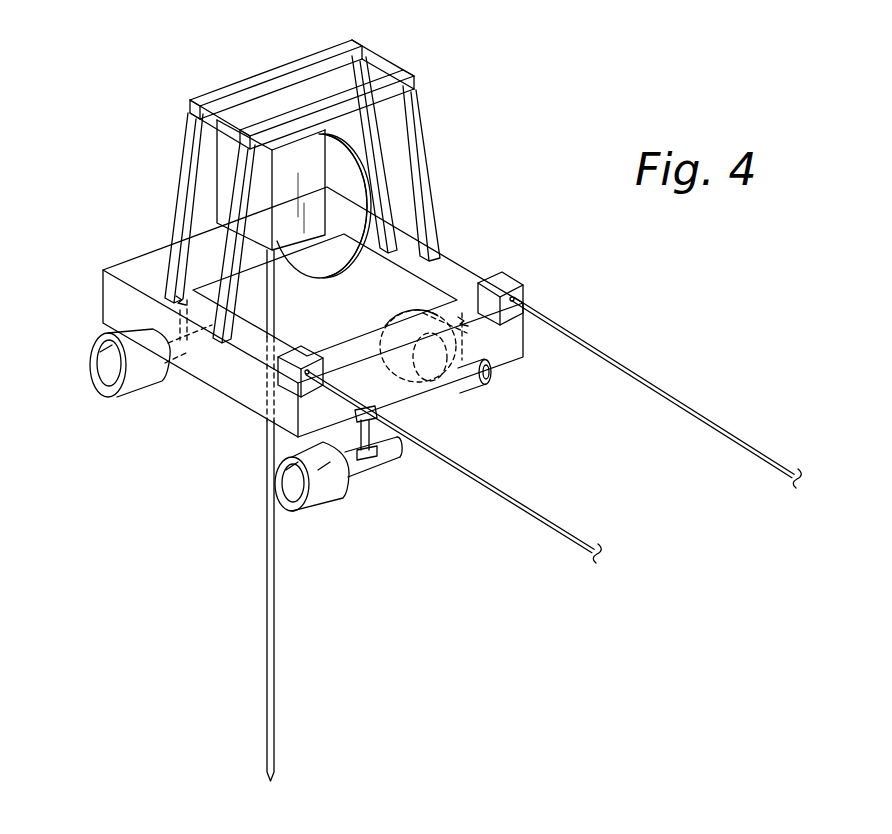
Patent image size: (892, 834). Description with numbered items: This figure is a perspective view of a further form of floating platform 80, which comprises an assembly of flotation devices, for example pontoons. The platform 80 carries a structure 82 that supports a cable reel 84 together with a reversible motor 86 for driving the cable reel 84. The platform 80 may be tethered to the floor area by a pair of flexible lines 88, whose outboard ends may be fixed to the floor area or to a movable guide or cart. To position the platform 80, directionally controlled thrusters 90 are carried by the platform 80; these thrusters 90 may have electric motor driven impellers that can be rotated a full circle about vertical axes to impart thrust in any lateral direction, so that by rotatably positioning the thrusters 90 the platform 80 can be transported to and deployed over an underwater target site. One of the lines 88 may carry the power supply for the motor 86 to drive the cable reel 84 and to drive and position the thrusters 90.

The floating platform 80 is at (133, 258).
The structure 82 is at (188, 157).
The cable reel 84 is at (338, 188).
The reversible motor 86 is at (308, 165).
The flexible lines 88 is at (660, 388).
The thrusters 90 is at (322, 480).